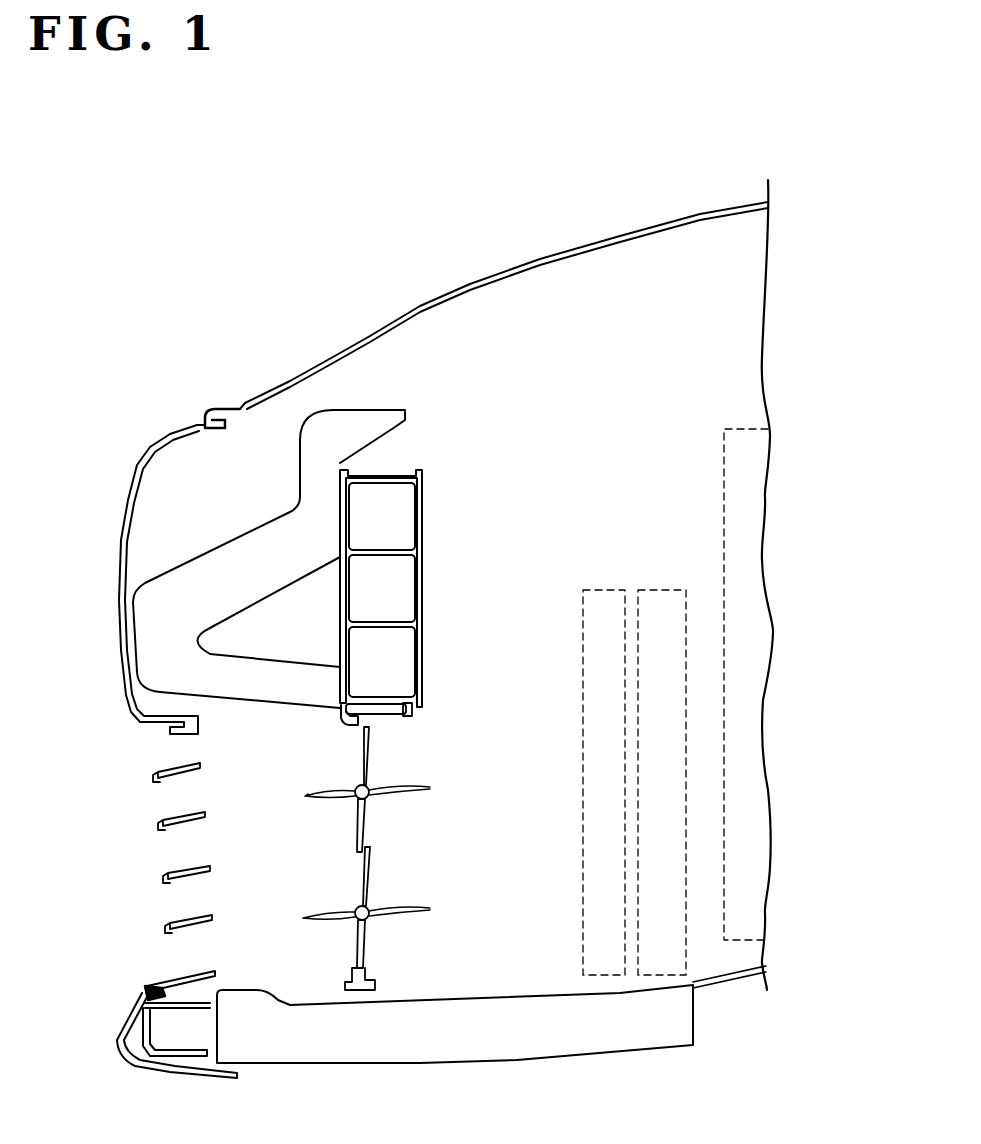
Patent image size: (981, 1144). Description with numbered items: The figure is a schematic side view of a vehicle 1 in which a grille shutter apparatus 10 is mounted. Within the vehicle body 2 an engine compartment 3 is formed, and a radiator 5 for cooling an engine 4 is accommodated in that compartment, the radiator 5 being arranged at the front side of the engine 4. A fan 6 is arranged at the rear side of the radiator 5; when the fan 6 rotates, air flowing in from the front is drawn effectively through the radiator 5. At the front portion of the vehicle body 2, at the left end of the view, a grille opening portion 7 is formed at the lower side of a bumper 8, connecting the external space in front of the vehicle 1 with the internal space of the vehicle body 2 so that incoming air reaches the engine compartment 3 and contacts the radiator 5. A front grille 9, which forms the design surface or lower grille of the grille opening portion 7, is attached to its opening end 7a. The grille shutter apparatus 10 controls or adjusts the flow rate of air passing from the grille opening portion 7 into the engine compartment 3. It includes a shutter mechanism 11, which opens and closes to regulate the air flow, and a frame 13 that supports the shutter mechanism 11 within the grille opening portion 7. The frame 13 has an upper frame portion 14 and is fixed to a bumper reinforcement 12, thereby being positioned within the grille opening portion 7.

The vehicle 1 is at (190, 150).
The vehicle body 2 is at (521, 263).
The engine compartment 3 is at (694, 353).
The engine 4 is at (724, 469).
The radiator 5 is at (602, 590).
The fan 6 is at (659, 590).
The grille opening portion 7 is at (132, 737).
The opening end 7a is at (160, 976).
The bumper 8 is at (405, 442).
The front grille 9 is at (158, 776).
The grille shutter apparatus 10 is at (318, 777).
The shutter mechanism 11 is at (340, 857).
The bumper reinforcement 12 is at (424, 499).
The frame 13 is at (410, 712).
The upper frame portion 14 is at (376, 714).